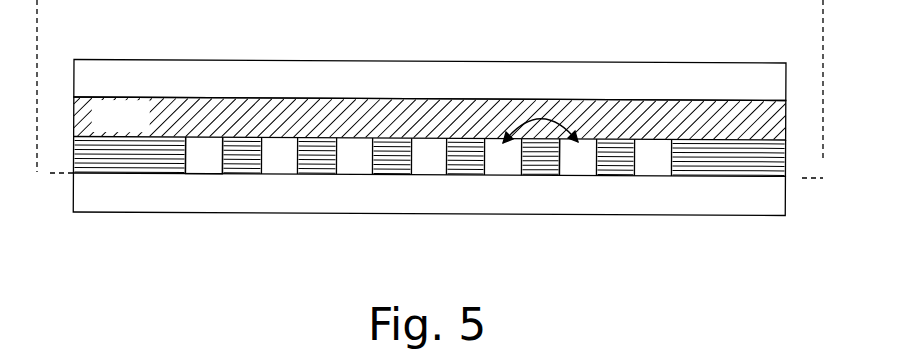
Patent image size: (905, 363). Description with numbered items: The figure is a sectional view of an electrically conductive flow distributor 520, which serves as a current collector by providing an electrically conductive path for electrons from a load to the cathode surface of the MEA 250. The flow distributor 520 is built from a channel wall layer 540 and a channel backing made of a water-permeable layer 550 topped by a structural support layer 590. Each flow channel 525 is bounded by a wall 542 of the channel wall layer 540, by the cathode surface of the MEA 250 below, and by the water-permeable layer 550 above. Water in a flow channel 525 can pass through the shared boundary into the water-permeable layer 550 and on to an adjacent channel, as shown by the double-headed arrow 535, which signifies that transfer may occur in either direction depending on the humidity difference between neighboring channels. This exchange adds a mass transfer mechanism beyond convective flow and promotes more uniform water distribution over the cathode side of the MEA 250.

The flow distributor 520 is at (118, 30).
The structural support layer 590 is at (145, 91).
The water-permeable layer 550 is at (145, 129).
The MEA 250 is at (145, 206).
The flow channel 525 is at (202, 157).
The wall 542 is at (540, 157).
The channel wall layer 540 is at (727, 157).
The double-headed arrow 535 is at (547, 120).